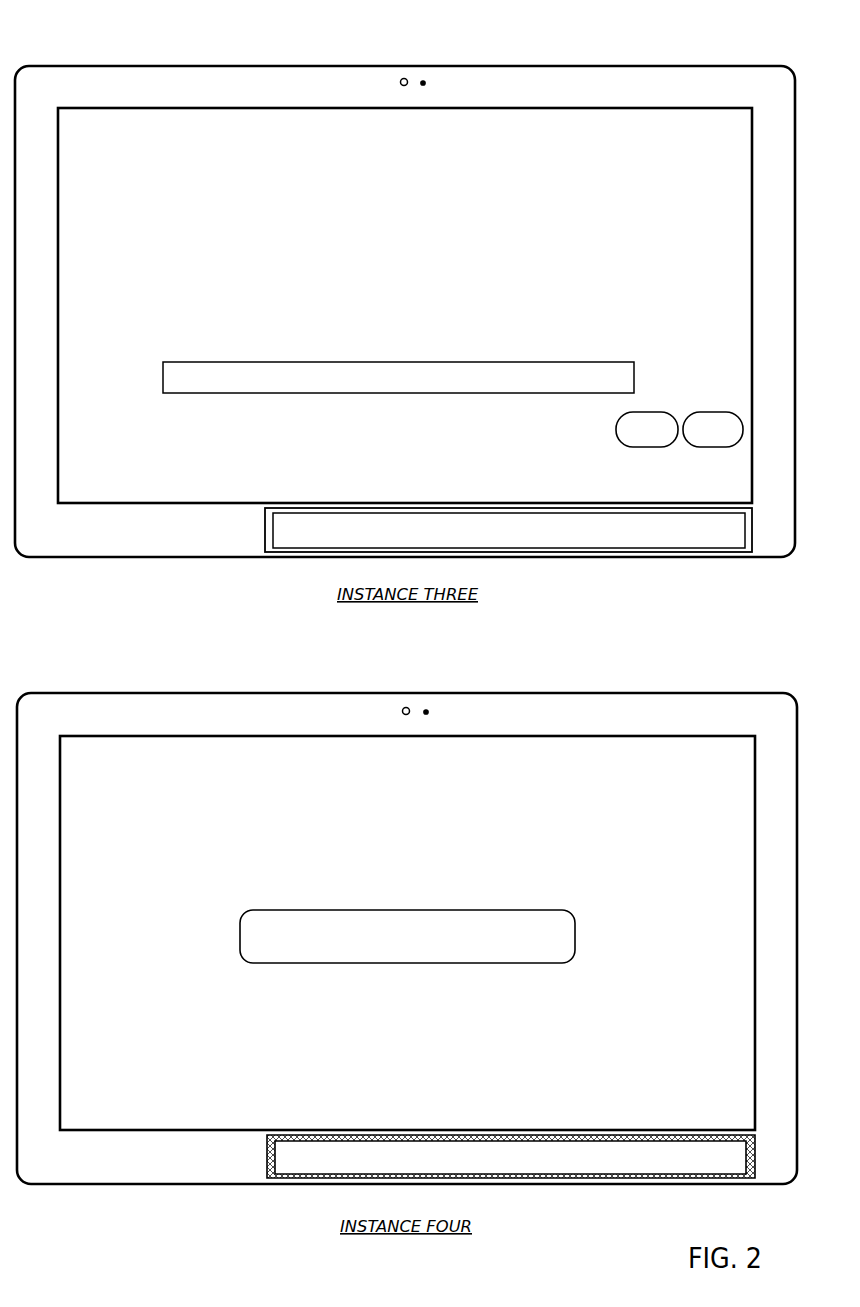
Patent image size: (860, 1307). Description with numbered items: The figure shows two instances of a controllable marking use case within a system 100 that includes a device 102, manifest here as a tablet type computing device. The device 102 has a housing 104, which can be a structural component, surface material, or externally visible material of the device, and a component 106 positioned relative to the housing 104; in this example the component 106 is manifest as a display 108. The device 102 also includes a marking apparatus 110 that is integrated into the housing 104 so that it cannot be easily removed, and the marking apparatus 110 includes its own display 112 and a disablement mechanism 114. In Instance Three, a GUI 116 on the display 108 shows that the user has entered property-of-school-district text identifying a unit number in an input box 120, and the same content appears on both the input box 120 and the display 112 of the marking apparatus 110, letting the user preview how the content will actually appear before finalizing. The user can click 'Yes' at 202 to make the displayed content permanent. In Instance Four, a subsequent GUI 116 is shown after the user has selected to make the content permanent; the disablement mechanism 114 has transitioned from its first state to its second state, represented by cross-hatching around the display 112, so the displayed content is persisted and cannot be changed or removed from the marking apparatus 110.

The system 100 is at (406, 596).
The device 102 is at (158, 58).
The housing 104 is at (660, 66).
The component 106 is at (672, 100).
The display 108 is at (333, 108).
The marking apparatus 110 is at (256, 543).
The display 112 is at (347, 513).
The disablement mechanism 114 is at (722, 505).
The GUI 116 is at (163, 130).
The input box 120 is at (170, 362).
The Yes selection 202 is at (645, 412).